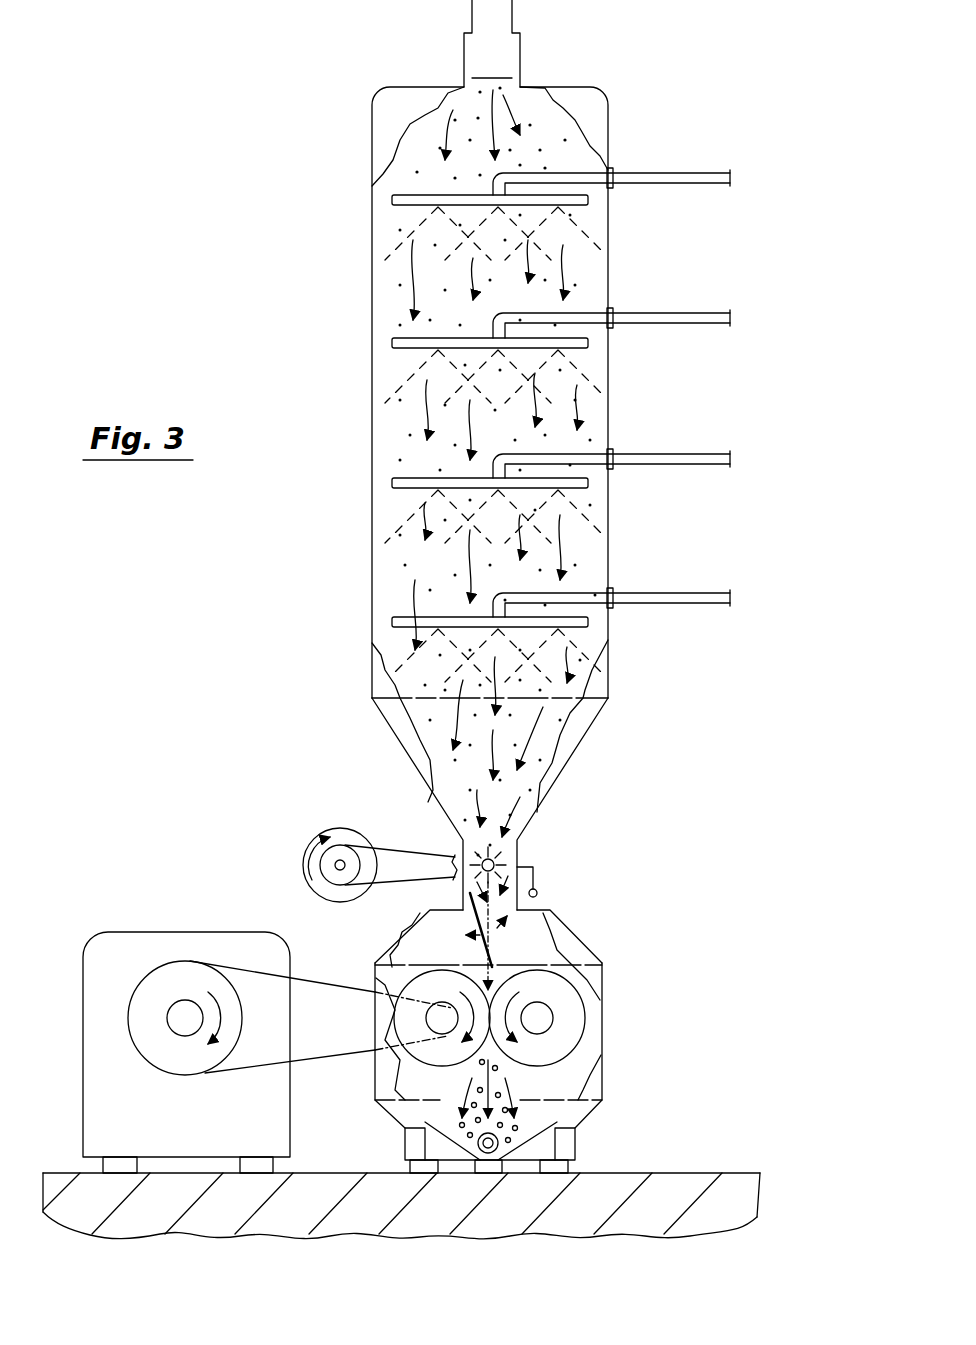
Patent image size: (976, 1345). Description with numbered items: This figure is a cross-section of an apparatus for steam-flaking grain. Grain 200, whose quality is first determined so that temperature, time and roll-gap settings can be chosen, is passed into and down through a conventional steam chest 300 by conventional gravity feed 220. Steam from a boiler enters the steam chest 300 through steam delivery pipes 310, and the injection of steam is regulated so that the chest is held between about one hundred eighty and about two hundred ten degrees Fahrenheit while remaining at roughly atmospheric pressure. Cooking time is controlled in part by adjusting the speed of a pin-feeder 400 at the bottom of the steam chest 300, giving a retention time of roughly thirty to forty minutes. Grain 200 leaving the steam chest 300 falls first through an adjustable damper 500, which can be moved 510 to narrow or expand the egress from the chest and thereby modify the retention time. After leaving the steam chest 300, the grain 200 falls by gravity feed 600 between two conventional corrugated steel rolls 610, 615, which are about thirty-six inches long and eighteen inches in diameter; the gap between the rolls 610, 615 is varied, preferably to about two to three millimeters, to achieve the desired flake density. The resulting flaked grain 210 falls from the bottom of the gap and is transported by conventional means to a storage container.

The grain 200 is at (538, 135).
The steam chest 300 is at (372, 203).
The steam delivery pipes 310 is at (672, 188).
The gravity feed 220 is at (402, 418).
The pin-feeder 400 is at (505, 860).
The movement of the damper 510 is at (542, 919).
The adjustable damper 500 is at (420, 928).
The gravity feed 600 is at (497, 971).
The steel roll 610 is at (398, 1021).
The steel roll 615 is at (570, 1020).
The flaked grain 210 is at (500, 1148).